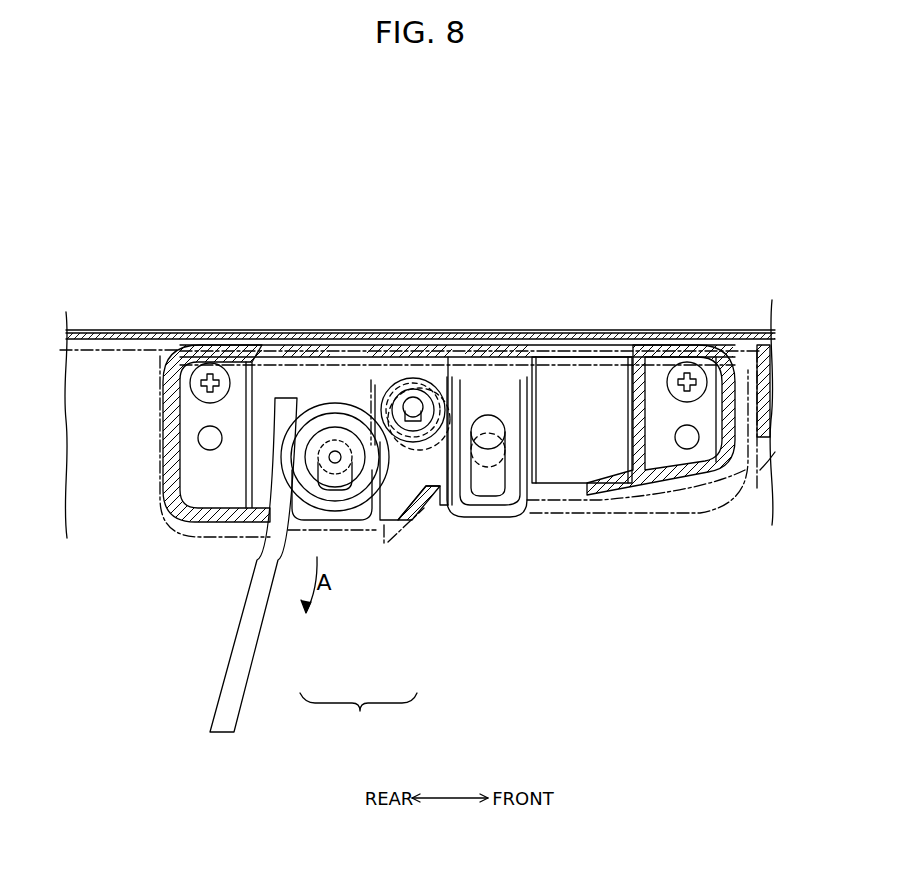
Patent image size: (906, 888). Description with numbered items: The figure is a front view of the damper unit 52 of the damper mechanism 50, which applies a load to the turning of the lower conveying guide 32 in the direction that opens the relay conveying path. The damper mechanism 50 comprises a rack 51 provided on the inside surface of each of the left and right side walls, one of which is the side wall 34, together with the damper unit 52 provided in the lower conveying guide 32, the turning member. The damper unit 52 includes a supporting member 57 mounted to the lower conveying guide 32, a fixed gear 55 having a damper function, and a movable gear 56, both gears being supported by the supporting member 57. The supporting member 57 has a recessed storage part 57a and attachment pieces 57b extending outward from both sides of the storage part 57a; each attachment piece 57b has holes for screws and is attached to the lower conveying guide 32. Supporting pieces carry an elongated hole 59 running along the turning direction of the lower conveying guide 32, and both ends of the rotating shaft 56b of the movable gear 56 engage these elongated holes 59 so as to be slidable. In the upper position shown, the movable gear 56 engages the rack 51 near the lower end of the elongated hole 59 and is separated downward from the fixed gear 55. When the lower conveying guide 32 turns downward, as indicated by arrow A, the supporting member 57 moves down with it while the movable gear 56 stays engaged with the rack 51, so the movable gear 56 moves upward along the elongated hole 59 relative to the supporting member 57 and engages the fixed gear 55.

The lower conveying guide 32 is at (160, 332).
The side wall 34 is at (107, 503).
The damper mechanism 50 is at (358, 714).
The rack 51 is at (268, 590).
The damper unit 52 is at (421, 580).
The fixed gear 55 is at (398, 376).
The movable gear 56 is at (310, 402).
The rotating shaft 56b is at (333, 450).
The supporting member 57 is at (213, 345).
The storage part 57a is at (404, 490).
The attachment piece 57b is at (205, 487).
The elongated hole 59 is at (368, 376).